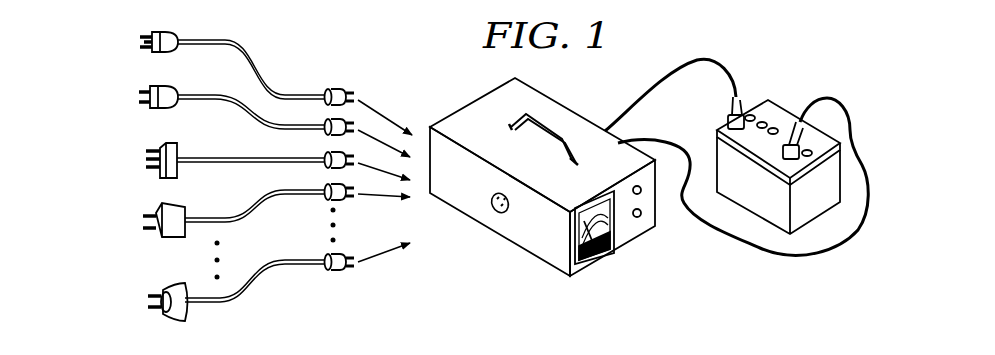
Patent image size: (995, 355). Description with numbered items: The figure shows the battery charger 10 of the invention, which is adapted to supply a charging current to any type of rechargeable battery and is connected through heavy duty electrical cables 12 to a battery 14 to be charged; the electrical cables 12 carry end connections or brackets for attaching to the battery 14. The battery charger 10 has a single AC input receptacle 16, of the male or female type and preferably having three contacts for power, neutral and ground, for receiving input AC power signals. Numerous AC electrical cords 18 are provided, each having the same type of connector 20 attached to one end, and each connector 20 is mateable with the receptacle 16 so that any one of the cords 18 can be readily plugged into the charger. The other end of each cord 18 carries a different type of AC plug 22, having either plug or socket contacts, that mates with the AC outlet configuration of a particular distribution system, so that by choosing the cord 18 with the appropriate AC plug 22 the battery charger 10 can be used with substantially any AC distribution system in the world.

The battery charger 10 is at (596, 85).
The heavy duty electrical cables 12 is at (706, 53).
The battery 14 is at (767, 109).
The AC input receptacle 16 is at (495, 213).
The AC electrical cords 18 is at (291, 77).
The connector 20 is at (350, 77).
The AC plug 22 is at (188, 31).